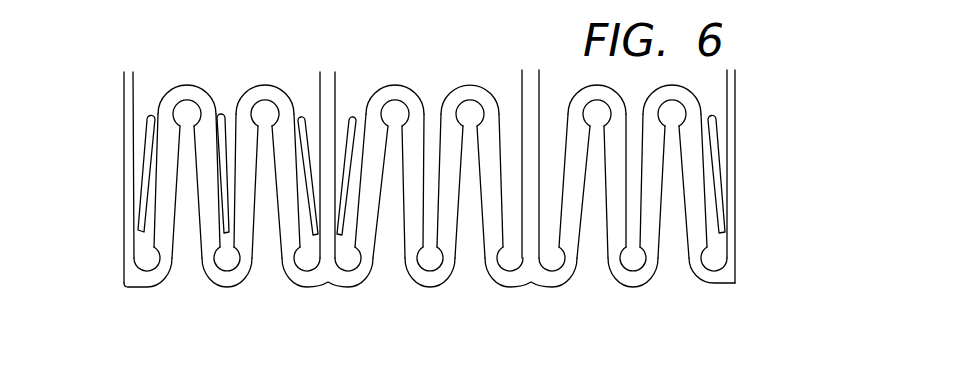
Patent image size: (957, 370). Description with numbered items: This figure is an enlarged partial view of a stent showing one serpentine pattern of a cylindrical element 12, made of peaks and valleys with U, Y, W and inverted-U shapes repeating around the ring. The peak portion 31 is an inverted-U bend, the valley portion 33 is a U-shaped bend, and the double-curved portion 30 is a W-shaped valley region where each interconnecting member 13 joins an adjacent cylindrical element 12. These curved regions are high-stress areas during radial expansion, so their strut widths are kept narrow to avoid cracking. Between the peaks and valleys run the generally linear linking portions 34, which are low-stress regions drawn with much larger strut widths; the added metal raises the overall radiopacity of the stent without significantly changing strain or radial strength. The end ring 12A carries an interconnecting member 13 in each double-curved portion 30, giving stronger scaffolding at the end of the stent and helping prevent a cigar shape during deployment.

The cylindrical element 12 is at (547, 5).
The first end ring 12A is at (738, 85).
The interconnecting member 13 is at (323, 88).
The double-curved portion 30 is at (370, 298).
The peak portion 31 is at (184, 86).
The valley portion 33 is at (429, 290).
The linking portion 34 is at (320, 170).